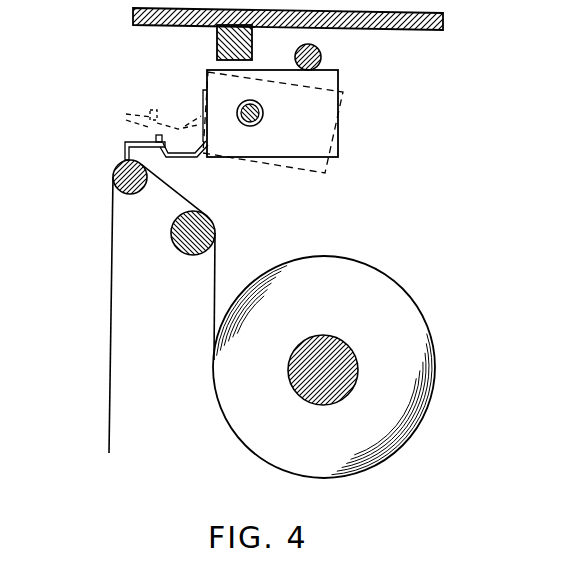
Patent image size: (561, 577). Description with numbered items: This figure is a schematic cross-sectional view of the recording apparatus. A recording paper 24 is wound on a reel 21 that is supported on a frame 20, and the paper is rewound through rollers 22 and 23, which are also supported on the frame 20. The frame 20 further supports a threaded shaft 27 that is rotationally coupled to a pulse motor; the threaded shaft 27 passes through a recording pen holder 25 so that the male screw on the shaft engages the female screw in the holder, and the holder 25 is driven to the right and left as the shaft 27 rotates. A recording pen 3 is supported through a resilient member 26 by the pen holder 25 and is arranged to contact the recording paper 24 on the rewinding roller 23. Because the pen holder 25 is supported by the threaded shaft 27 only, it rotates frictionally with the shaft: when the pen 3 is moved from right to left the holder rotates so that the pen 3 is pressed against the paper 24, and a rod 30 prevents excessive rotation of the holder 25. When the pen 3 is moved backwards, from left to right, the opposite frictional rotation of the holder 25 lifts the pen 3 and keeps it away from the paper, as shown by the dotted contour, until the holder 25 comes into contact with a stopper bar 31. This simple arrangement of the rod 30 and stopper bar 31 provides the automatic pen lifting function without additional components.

The frame 20 is at (445, 20).
The stopper bar 31 is at (217, 42).
The rod 30 is at (322, 55).
The recording pen holder 25 is at (340, 115).
The threaded shaft 27 is at (263, 113).
The resilient member 26 is at (181, 131).
The recording pen 3 is at (124, 119).
The roller 23 is at (112, 185).
The roller 22 is at (173, 250).
The recording paper 24 is at (110, 333).
The reel 21 is at (289, 382).